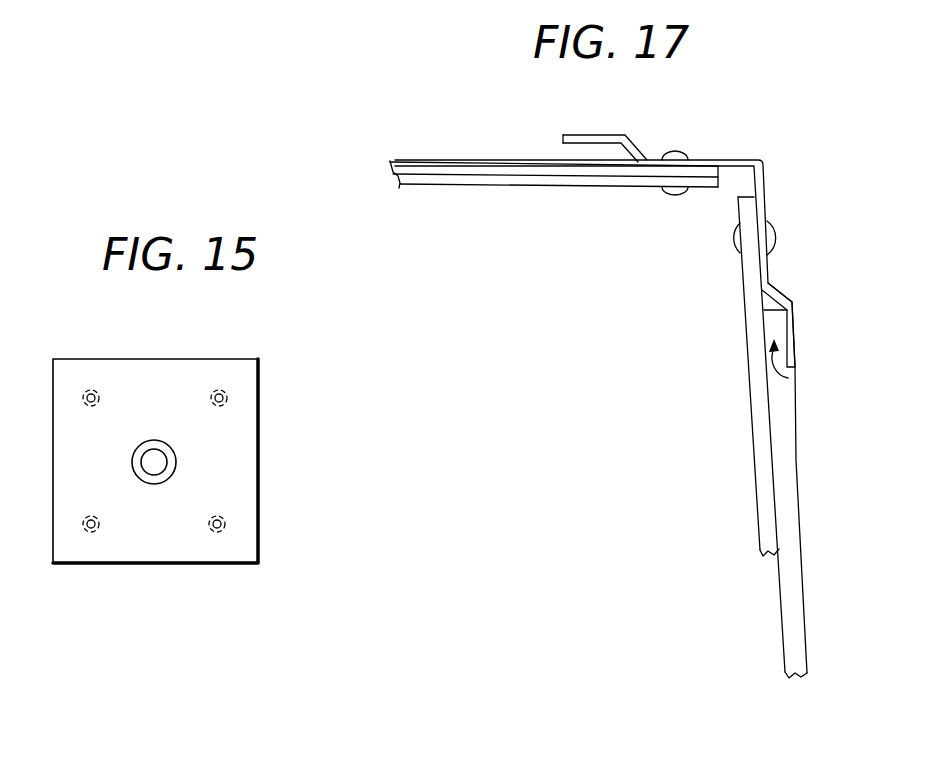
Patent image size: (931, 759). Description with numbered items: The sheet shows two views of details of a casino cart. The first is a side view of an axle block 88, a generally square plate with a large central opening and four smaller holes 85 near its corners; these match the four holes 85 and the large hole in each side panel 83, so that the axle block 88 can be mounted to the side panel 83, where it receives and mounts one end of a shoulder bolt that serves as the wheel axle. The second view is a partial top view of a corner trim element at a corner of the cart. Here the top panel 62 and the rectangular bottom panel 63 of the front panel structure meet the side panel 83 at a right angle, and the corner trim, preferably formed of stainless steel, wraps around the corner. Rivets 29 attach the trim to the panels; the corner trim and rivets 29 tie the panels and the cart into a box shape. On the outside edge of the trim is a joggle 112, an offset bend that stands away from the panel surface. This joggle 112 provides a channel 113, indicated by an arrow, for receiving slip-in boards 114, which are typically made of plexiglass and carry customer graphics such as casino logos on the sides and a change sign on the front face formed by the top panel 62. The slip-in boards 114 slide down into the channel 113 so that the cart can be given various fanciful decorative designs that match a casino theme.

In FIG. 15, the holes 85 is at (100, 393).
In FIG. 15, the axle block 88 is at (236, 444).
In FIG. 17, the top panel 62 is at (449, 162).
In FIG. 17, the bottom panel 63 is at (485, 184).
In FIG. 17, the joggle 112 is at (590, 136).
In FIG. 17, the rivets 29 is at (668, 152).
In FIG. 17, the channel 113 is at (788, 378).
In FIG. 17, the side panel 83 is at (765, 445).
In FIG. 17, the slip-in boards 114 is at (792, 578).